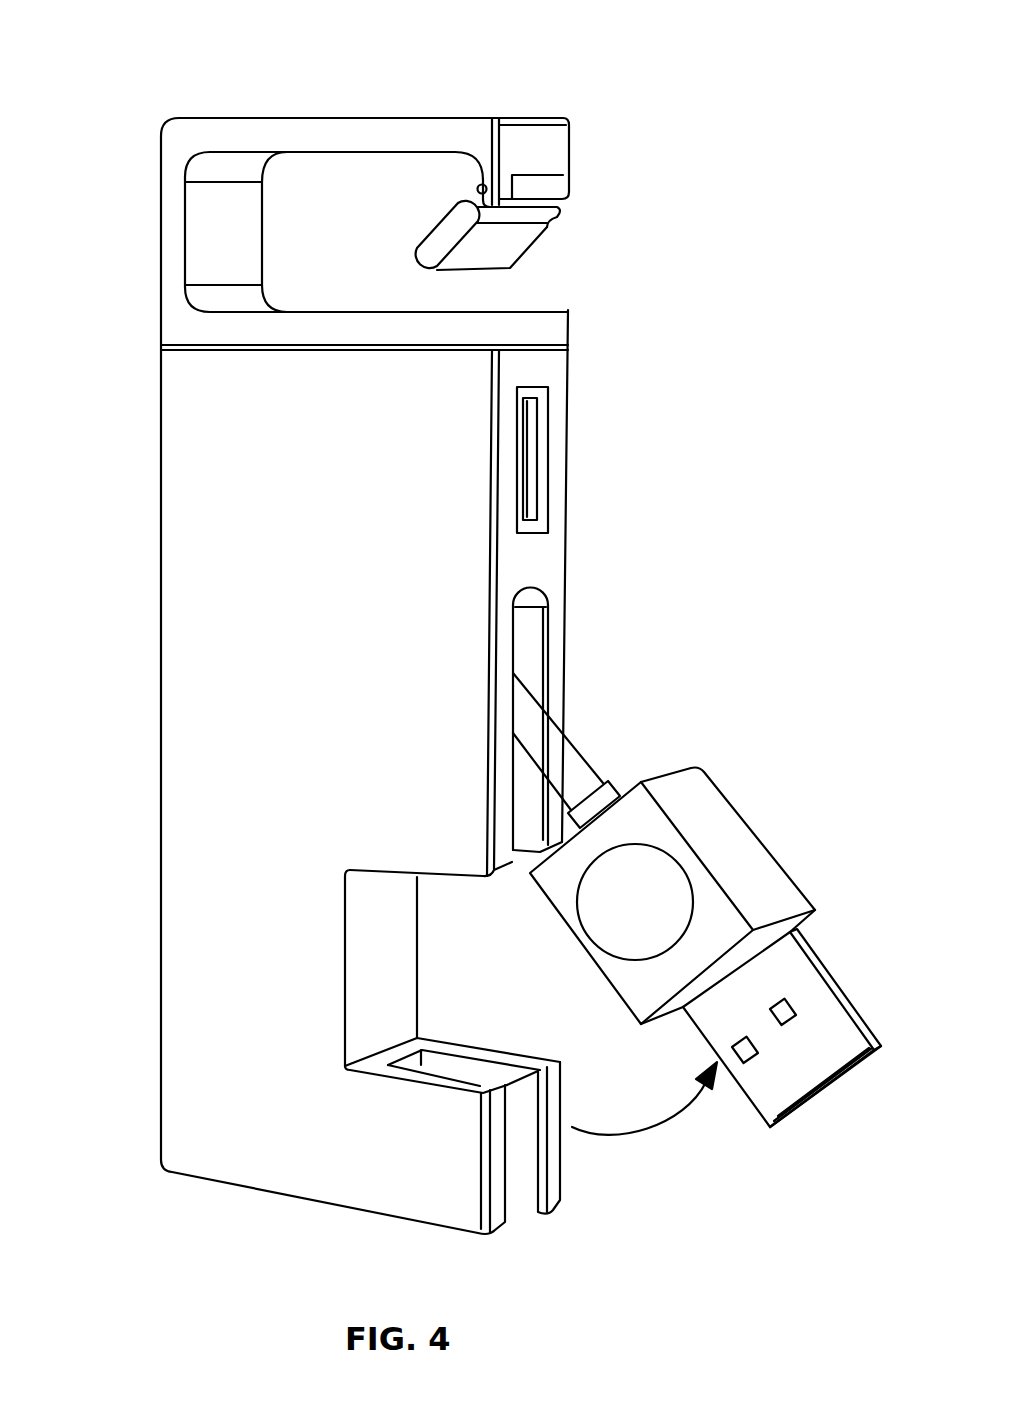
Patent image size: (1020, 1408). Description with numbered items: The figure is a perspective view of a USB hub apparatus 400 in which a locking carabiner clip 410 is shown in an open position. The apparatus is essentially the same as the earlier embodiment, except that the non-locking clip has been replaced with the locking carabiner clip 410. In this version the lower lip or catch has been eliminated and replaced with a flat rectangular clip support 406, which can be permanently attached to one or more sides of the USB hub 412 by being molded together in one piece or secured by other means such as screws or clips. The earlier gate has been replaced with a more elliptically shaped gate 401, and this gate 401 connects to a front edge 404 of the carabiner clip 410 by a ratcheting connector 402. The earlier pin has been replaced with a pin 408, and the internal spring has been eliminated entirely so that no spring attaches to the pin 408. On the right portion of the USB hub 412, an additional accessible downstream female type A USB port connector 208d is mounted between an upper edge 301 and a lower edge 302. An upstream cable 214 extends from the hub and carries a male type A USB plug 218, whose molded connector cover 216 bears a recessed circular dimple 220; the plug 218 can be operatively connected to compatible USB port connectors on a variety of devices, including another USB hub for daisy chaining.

The USB hub apparatus 400 is at (132, 39).
The locking carabiner clip 410 is at (330, 117).
The pin 408 is at (480, 184).
The front edge 404 is at (573, 157).
The ratcheting connector 402 is at (550, 188).
The gate 401 is at (512, 247).
The clip support 406 is at (557, 323).
The USB port connector 208d is at (550, 427).
The upper edge 301 is at (505, 587).
The lower edge 302 is at (557, 623).
The upstream cable 214 is at (577, 773).
The molded connector cover 216 is at (733, 815).
The dimple 220 is at (602, 933).
The USB plug 218 is at (823, 993).
The USB hub 412 is at (205, 1162).